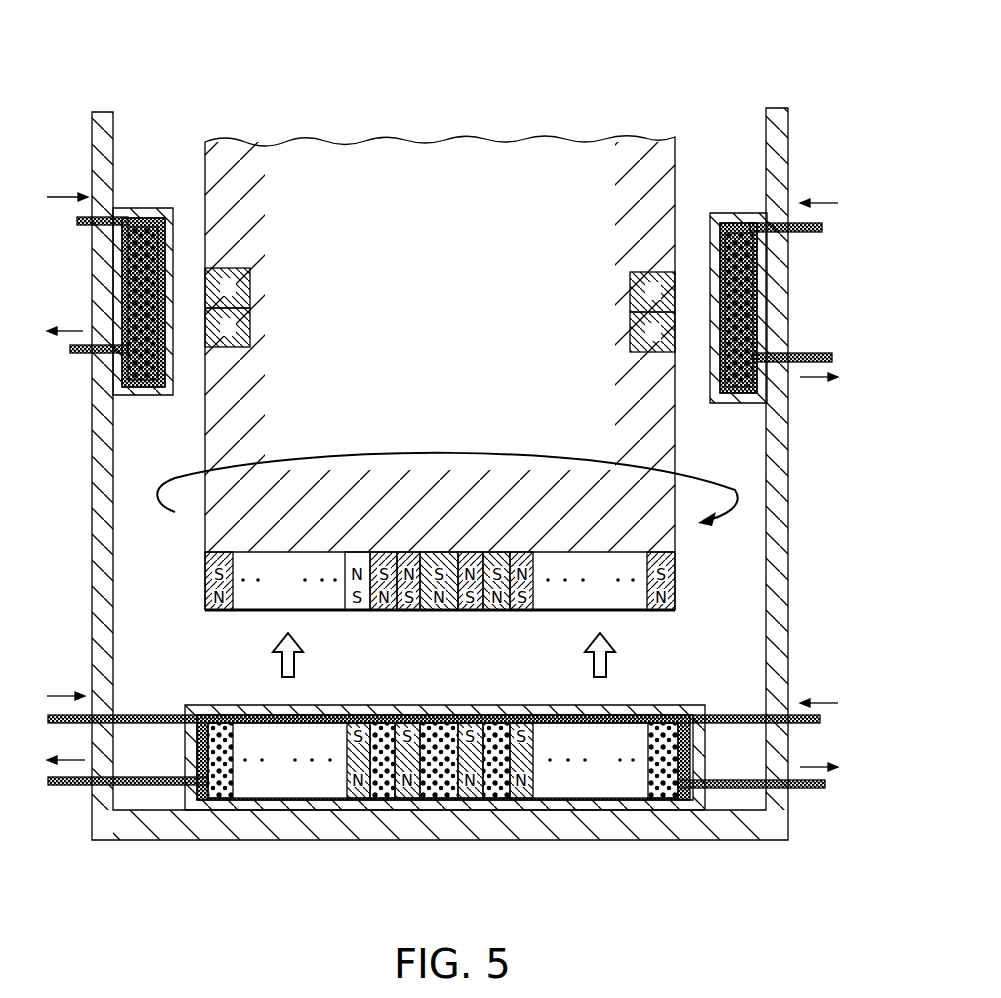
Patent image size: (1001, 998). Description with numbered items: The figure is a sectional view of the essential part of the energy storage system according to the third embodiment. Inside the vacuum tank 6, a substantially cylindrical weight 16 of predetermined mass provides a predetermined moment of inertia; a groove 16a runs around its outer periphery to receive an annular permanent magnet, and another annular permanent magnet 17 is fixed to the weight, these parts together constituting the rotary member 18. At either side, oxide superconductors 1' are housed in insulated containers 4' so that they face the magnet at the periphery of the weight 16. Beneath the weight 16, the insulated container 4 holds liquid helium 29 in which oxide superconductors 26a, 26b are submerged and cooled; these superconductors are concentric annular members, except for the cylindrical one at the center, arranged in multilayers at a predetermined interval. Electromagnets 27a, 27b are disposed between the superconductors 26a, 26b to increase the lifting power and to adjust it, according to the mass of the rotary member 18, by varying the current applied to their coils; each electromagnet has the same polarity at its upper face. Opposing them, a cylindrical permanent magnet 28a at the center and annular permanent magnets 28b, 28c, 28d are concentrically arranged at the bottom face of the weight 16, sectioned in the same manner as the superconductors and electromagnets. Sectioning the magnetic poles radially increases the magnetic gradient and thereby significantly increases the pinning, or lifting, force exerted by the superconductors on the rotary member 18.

The vacuum tank 6 is at (97, 136).
The rotary member 18 is at (685, 152).
The insulated container 4 is at (439, 853).
The weight 16 is at (445, 371).
The groove 16a is at (250, 278).
The annular permanent magnet 17 is at (250, 313).
The oxide superconductor 1' is at (439, 305).
The insulated container 4' is at (797, 329).
The cylindrical permanent magnet 28a is at (445, 552).
The annular permanent magnet 28b is at (468, 611).
The annular permanent magnet 28c is at (388, 552).
The annular permanent magnet 28d is at (360, 611).
The liquid helium 29 is at (205, 756).
The oxide superconductor 26a is at (440, 806).
The oxide superconductor 26b is at (500, 727).
The electromagnet 27a is at (470, 806).
The electromagnet 27b is at (360, 806).